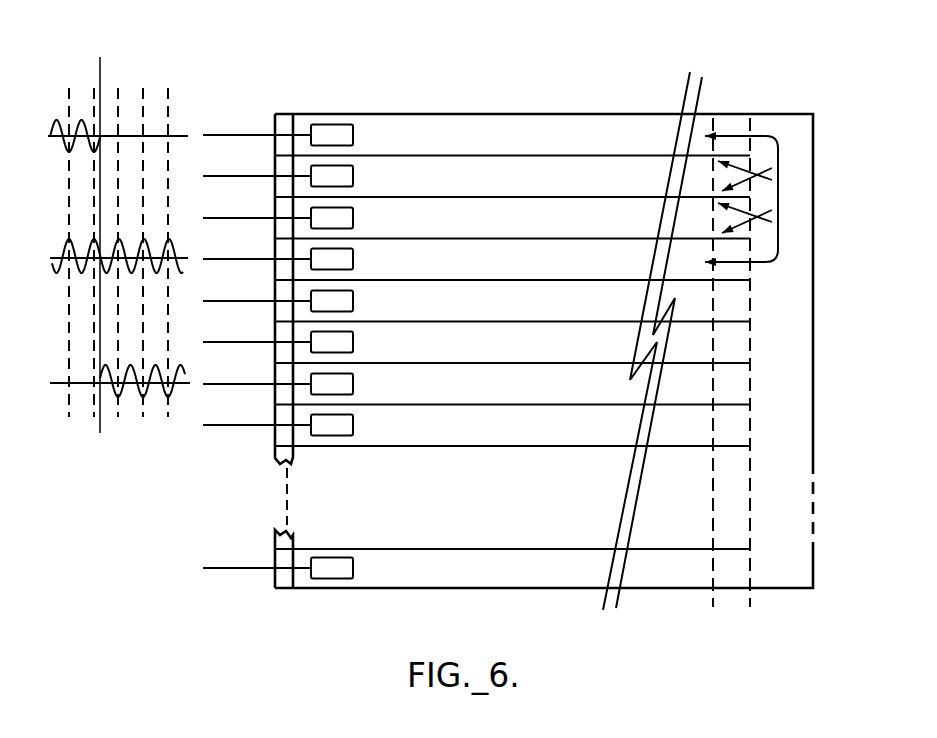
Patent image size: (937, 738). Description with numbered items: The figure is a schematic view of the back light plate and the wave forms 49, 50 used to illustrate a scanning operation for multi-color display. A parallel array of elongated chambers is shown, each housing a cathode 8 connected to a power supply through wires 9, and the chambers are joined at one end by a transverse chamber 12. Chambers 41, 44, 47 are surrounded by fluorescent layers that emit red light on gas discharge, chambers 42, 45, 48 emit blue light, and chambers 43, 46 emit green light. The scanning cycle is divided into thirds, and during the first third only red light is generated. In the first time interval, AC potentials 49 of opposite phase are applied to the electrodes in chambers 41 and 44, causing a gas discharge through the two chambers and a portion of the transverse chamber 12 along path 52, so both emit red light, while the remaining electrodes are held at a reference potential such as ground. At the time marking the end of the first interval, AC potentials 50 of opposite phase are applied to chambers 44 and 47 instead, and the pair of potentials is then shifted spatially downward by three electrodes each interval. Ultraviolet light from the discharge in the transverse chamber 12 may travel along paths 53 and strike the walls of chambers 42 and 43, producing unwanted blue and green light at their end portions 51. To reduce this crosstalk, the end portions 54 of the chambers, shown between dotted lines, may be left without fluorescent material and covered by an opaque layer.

The cathode 8 is at (337, 132).
The wires 9 is at (233, 132).
The transverse chamber 12 is at (783, 268).
The chamber 41 is at (383, 92).
The chamber 42 is at (402, 179).
The chamber 43 is at (417, 221).
The chamber 44 is at (383, 262).
The chamber 45 is at (402, 304).
The chamber 46 is at (416, 346).
The chamber 47 is at (384, 387).
The chamber 48 is at (401, 429).
The AC potentials 49 is at (70, 82).
The AC potentials 50 is at (131, 80).
The end portions 51 is at (742, 135).
The path 52 is at (778, 185).
The paths 53 is at (752, 168).
The end portions 54 is at (725, 578).